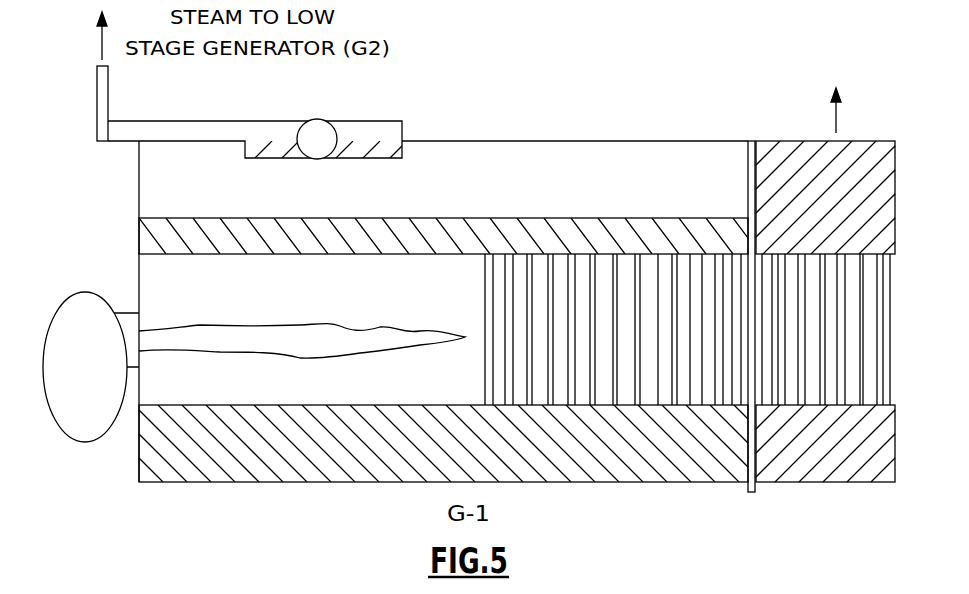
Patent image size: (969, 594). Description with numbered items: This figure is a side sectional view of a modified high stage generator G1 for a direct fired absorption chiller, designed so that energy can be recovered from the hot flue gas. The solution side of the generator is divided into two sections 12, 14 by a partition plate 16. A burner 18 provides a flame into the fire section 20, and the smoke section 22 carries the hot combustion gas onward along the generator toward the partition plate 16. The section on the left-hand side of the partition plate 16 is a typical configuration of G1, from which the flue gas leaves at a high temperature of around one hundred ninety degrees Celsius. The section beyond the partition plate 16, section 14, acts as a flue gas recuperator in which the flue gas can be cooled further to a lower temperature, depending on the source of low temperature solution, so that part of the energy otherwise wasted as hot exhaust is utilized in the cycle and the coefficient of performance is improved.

The first section 12 is at (277, 438).
The second section 14 is at (820, 483).
The partition plate 16 is at (748, 427).
The burner 18 is at (91, 430).
The fire section 20 is at (158, 283).
The smoke section 22 is at (584, 404).